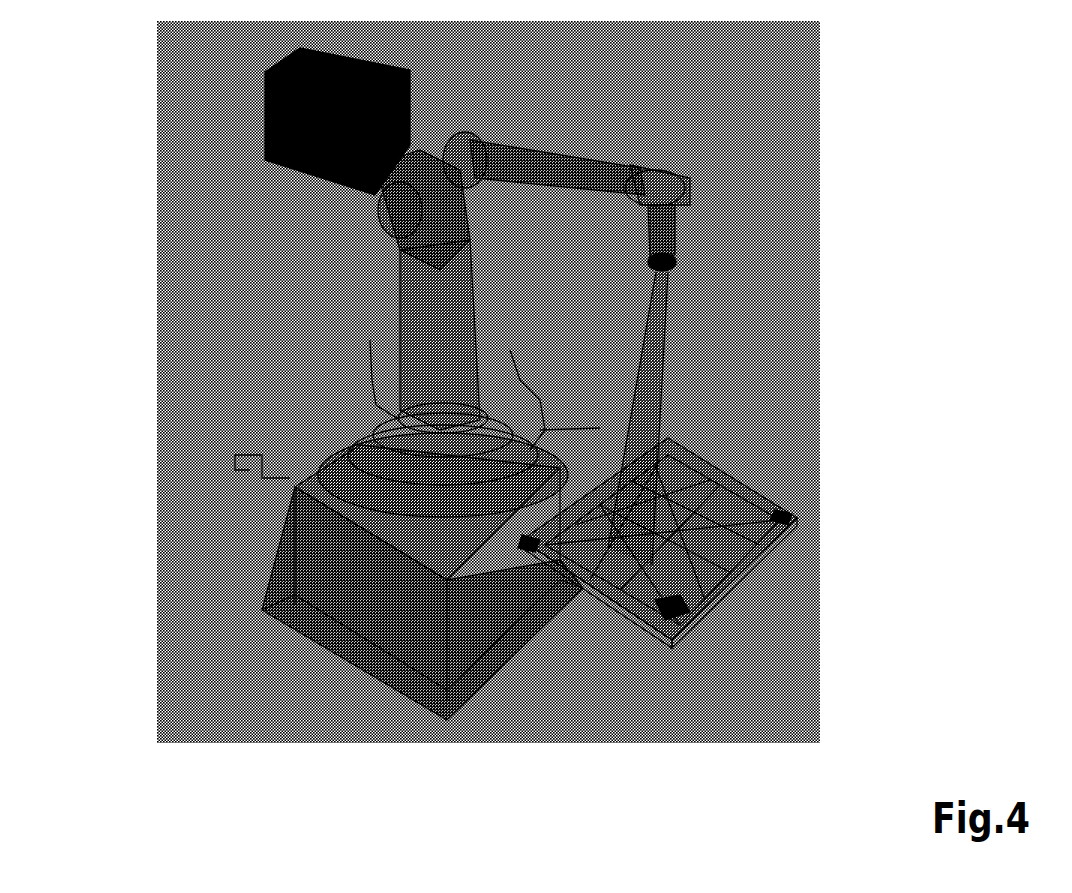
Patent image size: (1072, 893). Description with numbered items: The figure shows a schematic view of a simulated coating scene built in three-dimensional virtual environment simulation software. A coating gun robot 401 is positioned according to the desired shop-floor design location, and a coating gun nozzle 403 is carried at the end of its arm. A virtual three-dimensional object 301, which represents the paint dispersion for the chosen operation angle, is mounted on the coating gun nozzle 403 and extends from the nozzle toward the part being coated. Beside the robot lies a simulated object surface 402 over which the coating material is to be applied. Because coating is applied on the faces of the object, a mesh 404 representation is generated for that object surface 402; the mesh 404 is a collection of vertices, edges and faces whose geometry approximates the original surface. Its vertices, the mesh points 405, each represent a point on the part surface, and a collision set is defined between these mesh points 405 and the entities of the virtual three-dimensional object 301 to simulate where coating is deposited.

The coating gun robot 401 is at (570, 138).
The coating gun nozzle 403 is at (673, 277).
The virtual 3D object 301 is at (647, 352).
The object surface 402 is at (755, 577).
The mesh 404 is at (693, 577).
The mesh points 405 is at (657, 570).